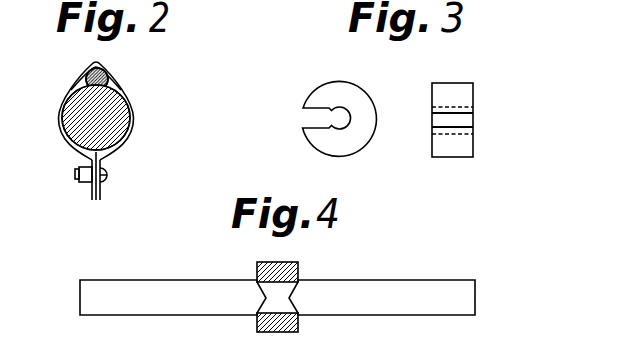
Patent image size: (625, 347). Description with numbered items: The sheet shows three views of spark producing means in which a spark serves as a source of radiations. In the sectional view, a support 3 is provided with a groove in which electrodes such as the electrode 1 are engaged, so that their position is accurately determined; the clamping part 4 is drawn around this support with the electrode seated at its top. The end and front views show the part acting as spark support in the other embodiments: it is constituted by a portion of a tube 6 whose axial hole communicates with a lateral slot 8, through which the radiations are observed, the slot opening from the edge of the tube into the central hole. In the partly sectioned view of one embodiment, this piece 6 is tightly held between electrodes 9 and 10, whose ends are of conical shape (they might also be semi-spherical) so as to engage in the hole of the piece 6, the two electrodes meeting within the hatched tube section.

In FIG. 2, the electrode 1 is at (90, 75).
In FIG. 3, the electrode 1 is at (342, 122).
In FIG. 2, the support 3 is at (83, 110).
In FIG. 2, the clamp band 4 is at (98, 149).
In FIG. 3, the tube 6 is at (450, 97).
In FIG. 4, the tube 6 is at (293, 318).
In FIG. 3, the lateral slot 8 is at (312, 116).
In FIG. 4, the electrode 9 is at (125, 308).
In FIG. 4, the electrode 10 is at (437, 312).